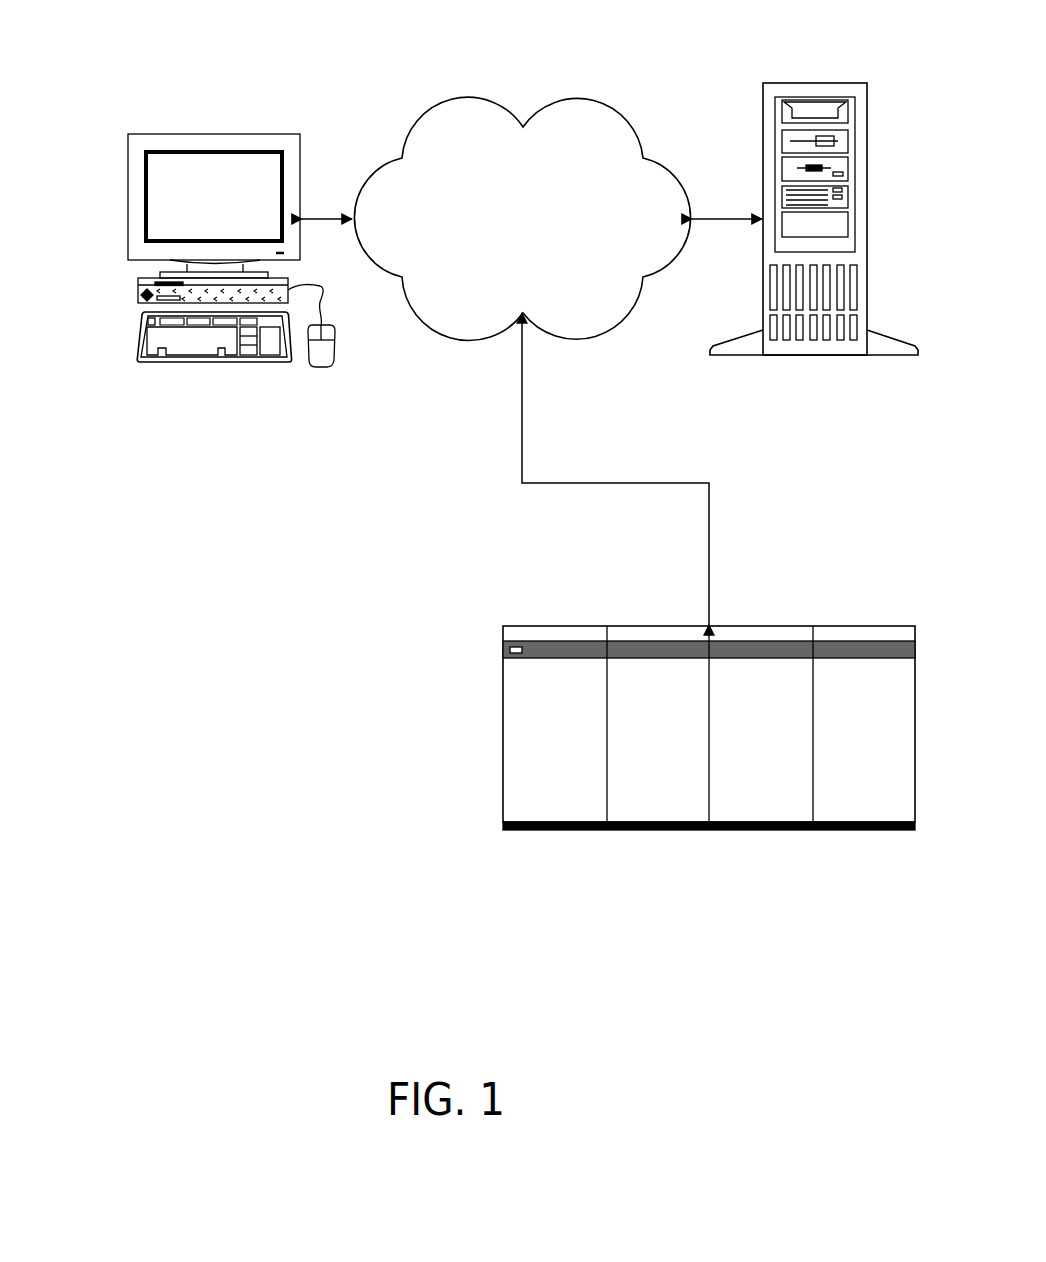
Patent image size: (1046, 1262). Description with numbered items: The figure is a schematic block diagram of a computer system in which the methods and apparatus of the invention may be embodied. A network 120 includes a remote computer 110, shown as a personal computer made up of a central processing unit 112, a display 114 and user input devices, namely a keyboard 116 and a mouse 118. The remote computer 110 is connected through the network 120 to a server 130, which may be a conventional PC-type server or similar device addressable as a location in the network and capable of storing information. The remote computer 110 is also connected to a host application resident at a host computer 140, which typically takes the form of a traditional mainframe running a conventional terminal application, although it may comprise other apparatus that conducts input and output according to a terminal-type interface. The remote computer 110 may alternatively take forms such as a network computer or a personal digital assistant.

The remote computer 110 is at (163, 90).
The central processing unit 112 is at (142, 305).
The display 114 is at (257, 187).
The keyboard 116 is at (188, 345).
The mouse 118 is at (325, 368).
The network 120 is at (473, 101).
The server 130 is at (815, 83).
The host computer 140 is at (503, 727).